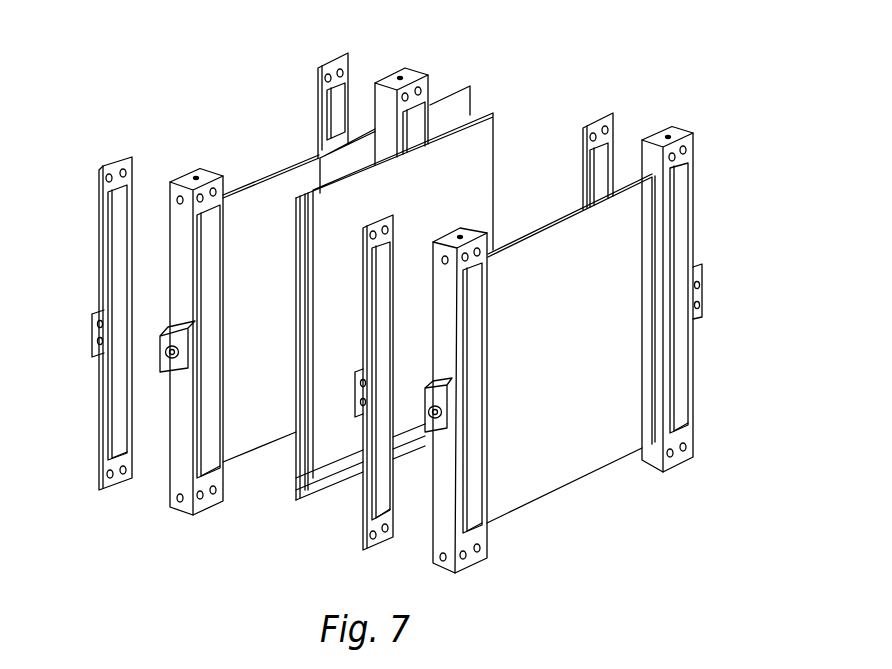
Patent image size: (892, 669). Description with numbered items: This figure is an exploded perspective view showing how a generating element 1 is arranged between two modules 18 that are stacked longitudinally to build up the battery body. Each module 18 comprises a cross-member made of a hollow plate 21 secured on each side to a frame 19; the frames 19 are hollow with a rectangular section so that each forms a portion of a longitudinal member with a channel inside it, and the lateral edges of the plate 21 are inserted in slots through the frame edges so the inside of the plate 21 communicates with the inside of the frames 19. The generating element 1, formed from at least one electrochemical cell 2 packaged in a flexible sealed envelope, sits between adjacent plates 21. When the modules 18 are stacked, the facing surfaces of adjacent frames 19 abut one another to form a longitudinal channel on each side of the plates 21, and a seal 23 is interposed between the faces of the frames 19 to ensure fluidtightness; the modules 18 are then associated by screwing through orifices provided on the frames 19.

The electrical energy generating element 1 is at (418, 339).
The electrochemical cell 2 is at (298, 503).
The module 18 is at (438, 310).
The frame 19 is at (212, 497).
The hollow plate 21 is at (252, 200).
The seal 23 is at (118, 157).